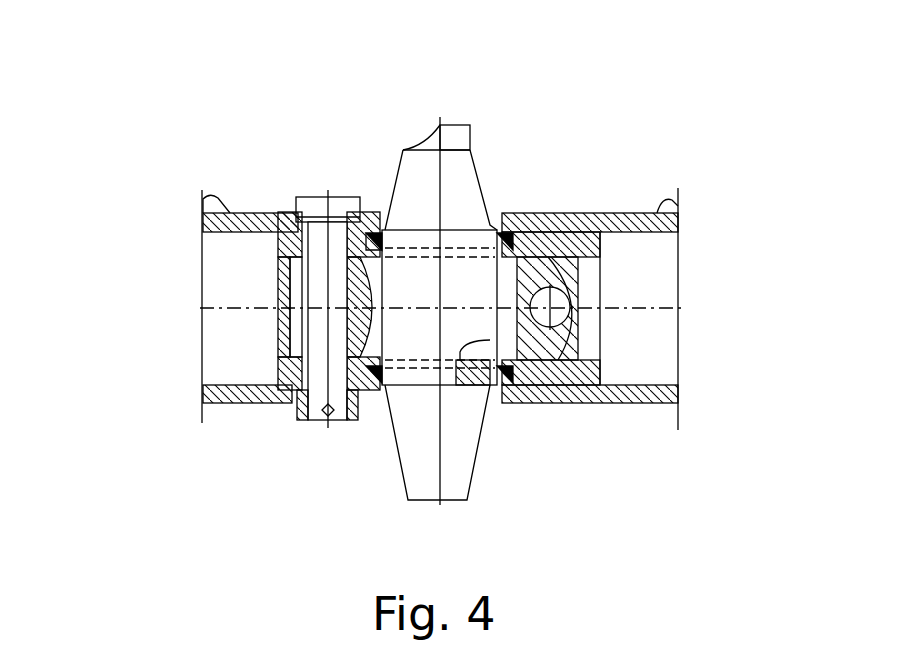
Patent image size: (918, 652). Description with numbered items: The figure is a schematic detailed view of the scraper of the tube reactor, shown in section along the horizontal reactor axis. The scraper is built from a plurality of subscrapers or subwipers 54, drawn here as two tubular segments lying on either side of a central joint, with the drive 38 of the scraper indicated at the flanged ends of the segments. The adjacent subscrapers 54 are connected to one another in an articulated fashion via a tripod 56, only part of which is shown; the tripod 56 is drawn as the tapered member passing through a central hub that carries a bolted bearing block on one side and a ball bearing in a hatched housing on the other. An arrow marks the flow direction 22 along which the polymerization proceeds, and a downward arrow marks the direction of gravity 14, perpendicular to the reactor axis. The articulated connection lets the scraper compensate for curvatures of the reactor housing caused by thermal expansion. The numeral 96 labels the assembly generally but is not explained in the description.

The direction of gravity 14 is at (131, 258).
The flow direction 22 is at (698, 310).
The drive 38 is at (199, 196).
The subscraper or subwiper 54 is at (235, 425).
The tripod 56 is at (457, 452).
The bearing assembly 96 is at (638, 133).